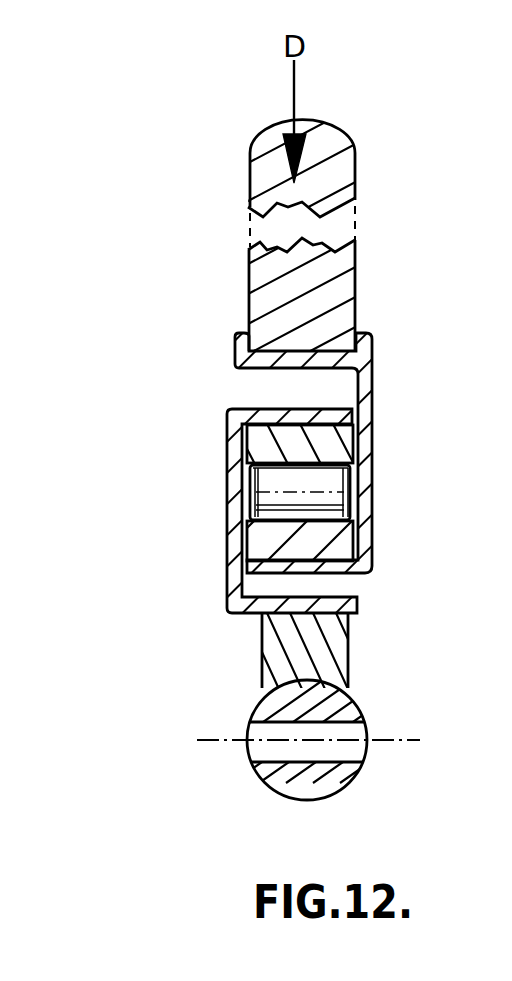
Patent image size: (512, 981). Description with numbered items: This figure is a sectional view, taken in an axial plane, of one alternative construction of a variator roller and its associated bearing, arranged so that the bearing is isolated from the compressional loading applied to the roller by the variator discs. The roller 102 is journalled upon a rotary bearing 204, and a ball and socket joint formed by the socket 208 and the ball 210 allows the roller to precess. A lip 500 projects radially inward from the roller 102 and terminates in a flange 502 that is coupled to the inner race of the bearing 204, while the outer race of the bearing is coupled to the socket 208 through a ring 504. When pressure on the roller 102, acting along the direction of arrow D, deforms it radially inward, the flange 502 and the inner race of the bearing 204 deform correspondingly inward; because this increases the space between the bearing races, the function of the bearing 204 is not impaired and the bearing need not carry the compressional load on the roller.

The roller 102 is at (352, 182).
The lip 500 is at (375, 452).
The ring 504 is at (228, 518).
The flange 502 is at (353, 573).
The rotary bearing 204 is at (375, 495).
The socket 208 is at (285, 711).
The ball 210 is at (293, 777).